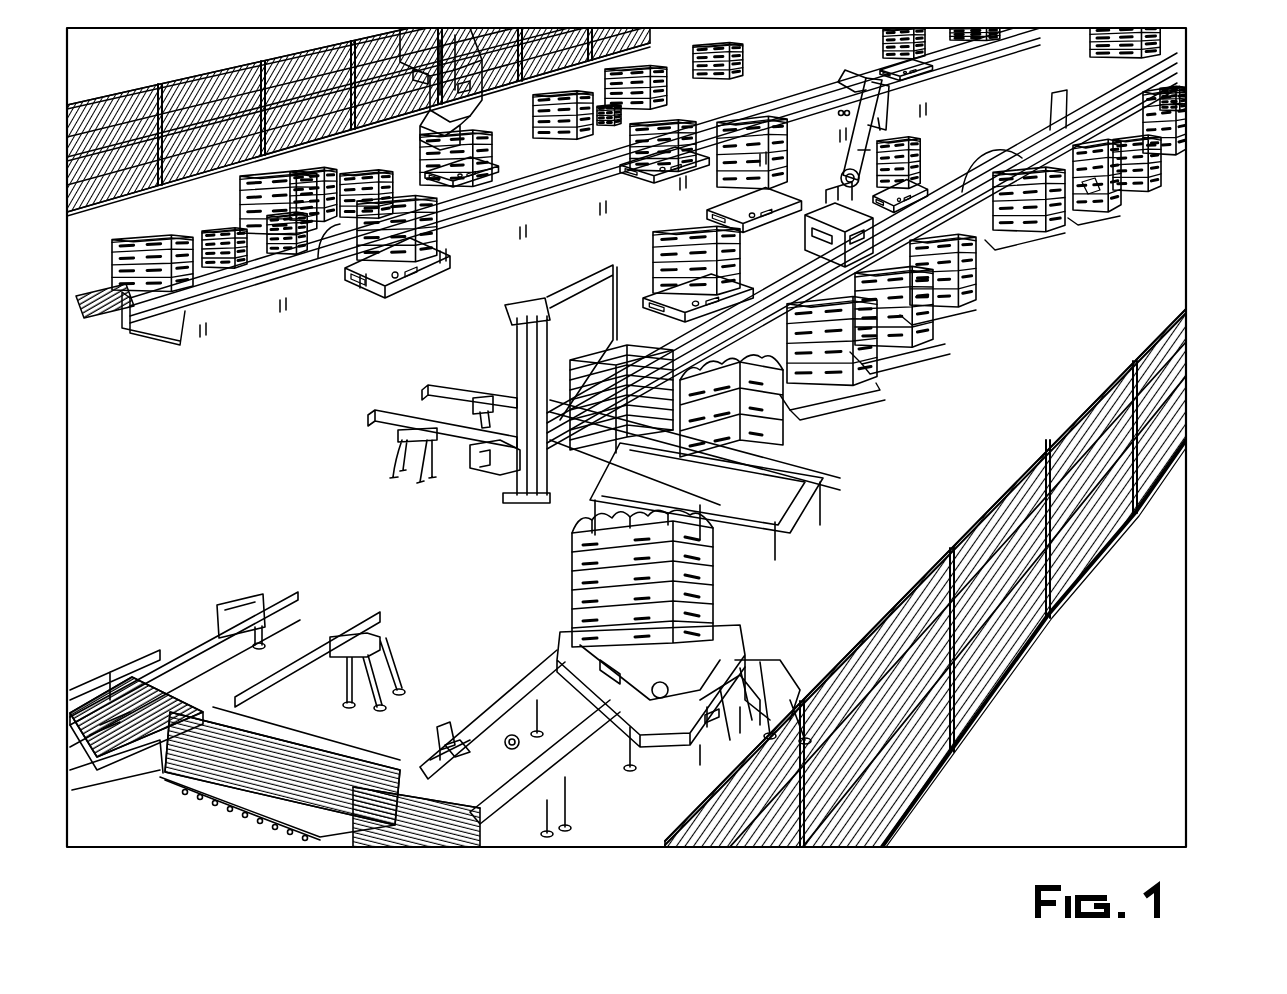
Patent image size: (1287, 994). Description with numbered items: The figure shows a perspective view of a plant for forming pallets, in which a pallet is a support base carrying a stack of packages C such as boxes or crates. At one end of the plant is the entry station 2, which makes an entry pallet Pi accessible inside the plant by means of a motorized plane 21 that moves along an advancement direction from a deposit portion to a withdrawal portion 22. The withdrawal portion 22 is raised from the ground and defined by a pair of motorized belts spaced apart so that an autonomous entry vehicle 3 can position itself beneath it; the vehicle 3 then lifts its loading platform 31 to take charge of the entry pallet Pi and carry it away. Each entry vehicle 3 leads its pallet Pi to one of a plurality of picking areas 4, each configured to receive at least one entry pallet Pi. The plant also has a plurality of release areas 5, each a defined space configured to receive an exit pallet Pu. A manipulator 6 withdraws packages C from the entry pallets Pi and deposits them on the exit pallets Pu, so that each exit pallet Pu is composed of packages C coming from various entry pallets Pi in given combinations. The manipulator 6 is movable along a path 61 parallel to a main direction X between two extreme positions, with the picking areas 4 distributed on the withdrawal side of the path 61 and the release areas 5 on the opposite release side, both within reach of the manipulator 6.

The entry station 2 is at (548, 628).
The autonomous entry vehicle (AGV) 3 is at (352, 284).
The picking area 4 is at (776, 267).
The release area 5 is at (851, 432).
The manipulator 6 is at (893, 116).
The path 61 is at (1082, 182).
The motorized plane 21 is at (505, 735).
The withdrawal portion 22 is at (748, 655).
The loading platform 31 is at (690, 650).
The entry pallet Pi is at (442, 234).
The exit pallet Pu is at (1047, 267).
The main direction X is at (503, 490).
The packages C is at (583, 581).